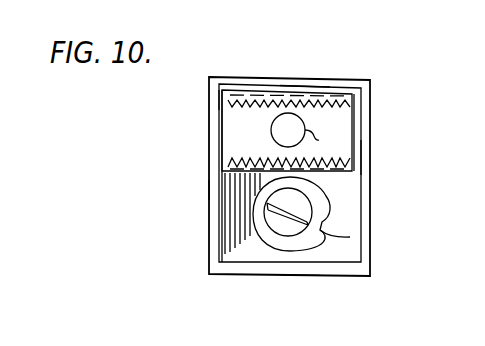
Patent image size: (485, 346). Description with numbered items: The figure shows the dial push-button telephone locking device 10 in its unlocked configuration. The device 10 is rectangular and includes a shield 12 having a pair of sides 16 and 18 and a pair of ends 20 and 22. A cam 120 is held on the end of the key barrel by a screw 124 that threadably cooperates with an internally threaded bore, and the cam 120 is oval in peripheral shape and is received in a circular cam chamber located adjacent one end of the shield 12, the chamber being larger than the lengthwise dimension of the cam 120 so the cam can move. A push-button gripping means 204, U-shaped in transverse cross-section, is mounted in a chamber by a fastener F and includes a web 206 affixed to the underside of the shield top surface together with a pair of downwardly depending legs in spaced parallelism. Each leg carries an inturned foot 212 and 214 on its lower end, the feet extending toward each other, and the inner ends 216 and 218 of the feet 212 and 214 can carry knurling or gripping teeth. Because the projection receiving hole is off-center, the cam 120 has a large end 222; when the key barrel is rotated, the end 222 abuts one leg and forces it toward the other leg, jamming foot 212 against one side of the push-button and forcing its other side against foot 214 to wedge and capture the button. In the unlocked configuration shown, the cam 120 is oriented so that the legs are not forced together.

The device 10 is at (376, 103).
The shield 12 is at (376, 123).
The side 16 is at (371, 158).
The side 18 is at (209, 190).
The end 20 is at (303, 85).
The end 22 is at (297, 276).
The cam 120 is at (321, 212).
The screw 124 is at (282, 221).
The push-button gripping means 204 is at (330, 91).
The web 206 is at (237, 122).
The foot 212 is at (243, 167).
The foot 214 is at (276, 95).
The inner end 216 is at (245, 160).
The inner end 218 is at (228, 106).
The large end 222 is at (350, 237).